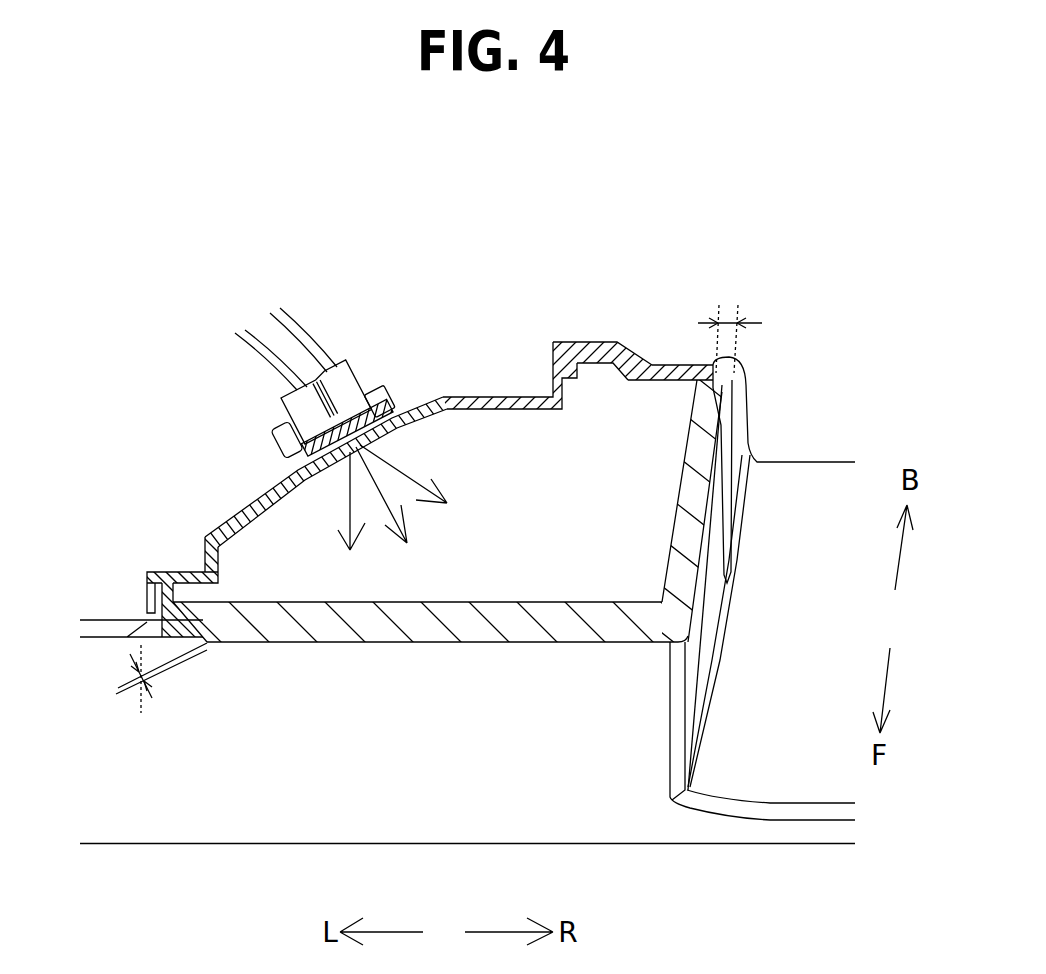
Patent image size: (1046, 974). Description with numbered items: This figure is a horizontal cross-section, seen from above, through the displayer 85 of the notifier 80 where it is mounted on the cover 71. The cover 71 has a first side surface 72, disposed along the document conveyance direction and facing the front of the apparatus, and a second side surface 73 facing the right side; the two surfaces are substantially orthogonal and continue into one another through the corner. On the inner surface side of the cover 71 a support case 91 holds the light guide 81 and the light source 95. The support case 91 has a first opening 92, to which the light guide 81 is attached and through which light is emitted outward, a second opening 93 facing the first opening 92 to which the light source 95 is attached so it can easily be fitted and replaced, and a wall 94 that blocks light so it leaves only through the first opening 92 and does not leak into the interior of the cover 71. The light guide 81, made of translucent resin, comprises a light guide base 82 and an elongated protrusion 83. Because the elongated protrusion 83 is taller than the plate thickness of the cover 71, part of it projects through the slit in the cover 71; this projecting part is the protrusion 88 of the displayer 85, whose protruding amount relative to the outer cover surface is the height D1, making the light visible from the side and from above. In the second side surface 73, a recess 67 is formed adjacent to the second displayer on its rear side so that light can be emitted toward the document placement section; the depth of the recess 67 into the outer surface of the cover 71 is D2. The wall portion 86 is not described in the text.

The notifier 80 is at (562, 232).
The light guide 81 is at (503, 601).
The light guide base 82 is at (198, 613).
The elongated protrusion 83 is at (381, 644).
The displayer 85 is at (511, 646).
The wall portion 86 is at (699, 600).
The protrusion 88 is at (230, 646).
The support case 91 is at (465, 396).
The first opening 92 is at (661, 382).
The second opening 93 is at (328, 472).
The wall 94 is at (595, 341).
The light source 95 is at (362, 441).
The recess 67 is at (722, 392).
The second side surface 73 is at (705, 666).
The cover 71 is at (178, 828).
The first side surface 72 is at (255, 828).
The height D1 is at (122, 686).
The recess amount D2 is at (743, 332).